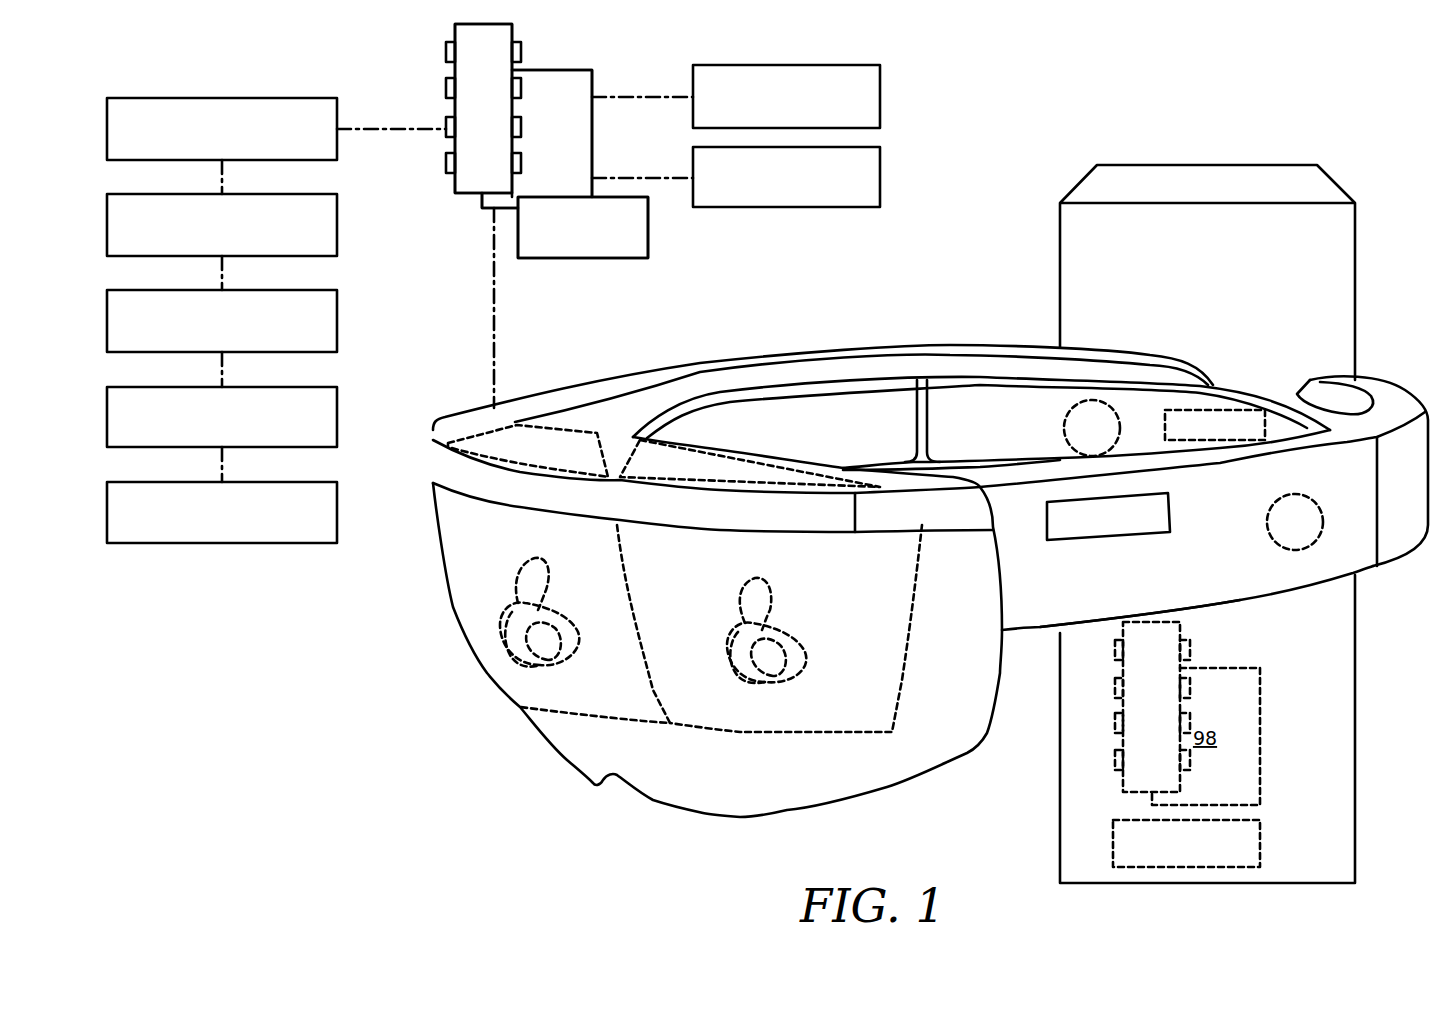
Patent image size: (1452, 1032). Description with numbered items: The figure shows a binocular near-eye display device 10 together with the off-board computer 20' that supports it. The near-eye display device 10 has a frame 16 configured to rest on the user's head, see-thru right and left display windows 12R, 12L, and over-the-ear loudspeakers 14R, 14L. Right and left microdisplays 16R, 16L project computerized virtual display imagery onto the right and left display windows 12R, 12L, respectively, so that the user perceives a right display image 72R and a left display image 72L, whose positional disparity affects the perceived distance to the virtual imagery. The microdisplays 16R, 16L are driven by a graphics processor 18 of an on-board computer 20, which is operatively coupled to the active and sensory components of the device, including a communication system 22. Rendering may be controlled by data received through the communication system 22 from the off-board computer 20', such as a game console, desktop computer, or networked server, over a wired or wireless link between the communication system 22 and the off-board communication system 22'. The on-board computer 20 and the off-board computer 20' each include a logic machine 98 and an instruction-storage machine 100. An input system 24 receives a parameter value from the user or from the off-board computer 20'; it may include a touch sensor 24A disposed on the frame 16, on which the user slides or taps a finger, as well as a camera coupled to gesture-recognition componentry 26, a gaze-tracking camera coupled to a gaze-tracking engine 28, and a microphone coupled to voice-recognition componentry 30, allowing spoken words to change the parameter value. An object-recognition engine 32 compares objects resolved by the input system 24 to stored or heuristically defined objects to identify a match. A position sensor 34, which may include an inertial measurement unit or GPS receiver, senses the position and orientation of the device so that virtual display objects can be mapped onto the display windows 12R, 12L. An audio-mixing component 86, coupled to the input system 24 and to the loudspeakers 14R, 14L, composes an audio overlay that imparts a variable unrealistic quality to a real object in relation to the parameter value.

The near-eye display device 10 is at (411, 423).
The right display window 12R is at (595, 624).
The left display window 12L is at (796, 628).
The right loudspeaker 14R is at (1165, 428).
The left loudspeaker 14L is at (1348, 452).
The frame 16 is at (1140, 601).
The right microdisplay 16R is at (528, 451).
The left microdisplay 16L is at (750, 463).
The graphics processor 18 is at (583, 227).
The on-board computer 20 is at (551, 137).
The off-board computer 20' is at (1207, 524).
The communication system 22 is at (786, 96).
The communication system 22' is at (1186, 843).
The input system 24 is at (222, 129).
The touch sensor 24A is at (1108, 516).
The gesture-recognition componentry 26 is at (222, 225).
The gaze-tracking engine 28 is at (222, 321).
The voice-recognition componentry 30 is at (222, 417).
The object-recognition engine 32 is at (222, 512).
The position sensor 34 is at (786, 177).
The right display image 72R is at (545, 558).
The left display image 72L is at (777, 590).
The audio-mixing component 86 is at (1307, 428).
The logic machine 98 is at (552, 133).
The instruction-storage machine 100 is at (818, 408).